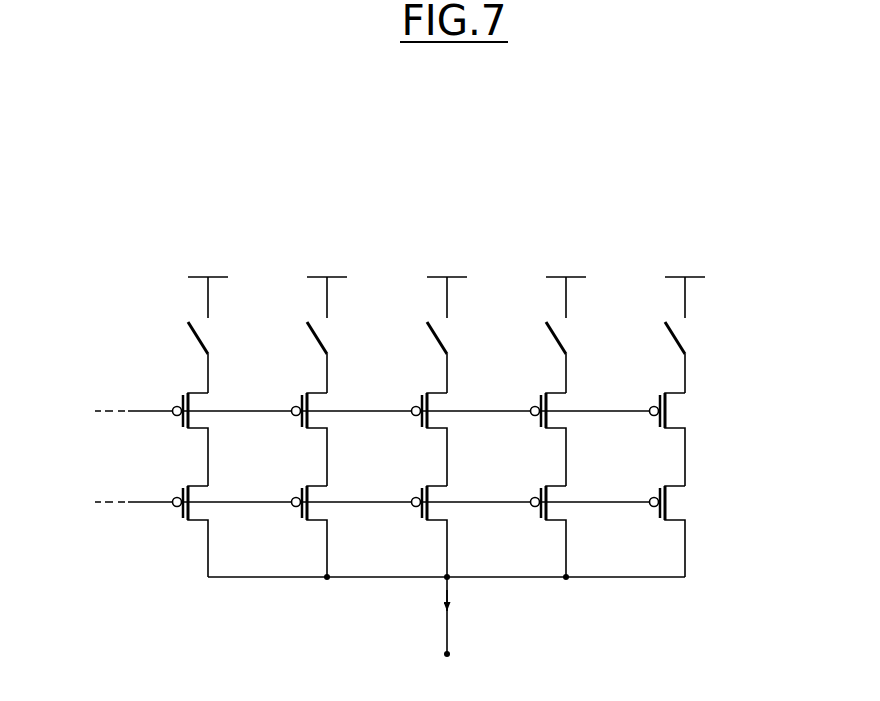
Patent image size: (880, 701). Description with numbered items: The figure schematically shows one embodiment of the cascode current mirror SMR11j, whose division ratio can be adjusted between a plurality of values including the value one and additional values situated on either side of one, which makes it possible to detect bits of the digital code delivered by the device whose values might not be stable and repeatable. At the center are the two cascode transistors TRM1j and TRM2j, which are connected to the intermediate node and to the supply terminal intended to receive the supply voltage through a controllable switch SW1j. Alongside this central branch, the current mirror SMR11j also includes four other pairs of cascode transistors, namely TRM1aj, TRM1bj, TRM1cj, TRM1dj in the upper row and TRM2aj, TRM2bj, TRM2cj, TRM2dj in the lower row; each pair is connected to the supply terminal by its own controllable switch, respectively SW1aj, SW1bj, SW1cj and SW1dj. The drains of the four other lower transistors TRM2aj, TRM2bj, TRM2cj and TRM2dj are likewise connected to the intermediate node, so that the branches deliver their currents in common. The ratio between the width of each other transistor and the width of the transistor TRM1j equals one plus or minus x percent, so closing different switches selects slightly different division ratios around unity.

The cascode current mirror SMR11j is at (527, 240).
The controllable switch SW1bj is at (207, 333).
The controllable switch SW1aj is at (326, 333).
The controllable switch SW1j is at (446, 333).
The controllable switch SW1cj is at (565, 333).
The controllable switch SW1dj is at (684, 333).
The cascode transistor TRM1bj is at (232, 421).
The cascode transistor TRM1aj is at (351, 421).
The cascode transistor TRM1j is at (459, 421).
The cascode transistor TRM1cj is at (590, 421).
The cascode transistor TRM1dj is at (709, 421).
The cascode transistor TRM2bj is at (232, 512).
The cascode transistor TRM2aj is at (351, 512).
The cascode transistor TRM2j is at (459, 512).
The cascode transistor TRM2cj is at (590, 512).
The cascode transistor TRM2dj is at (709, 512).